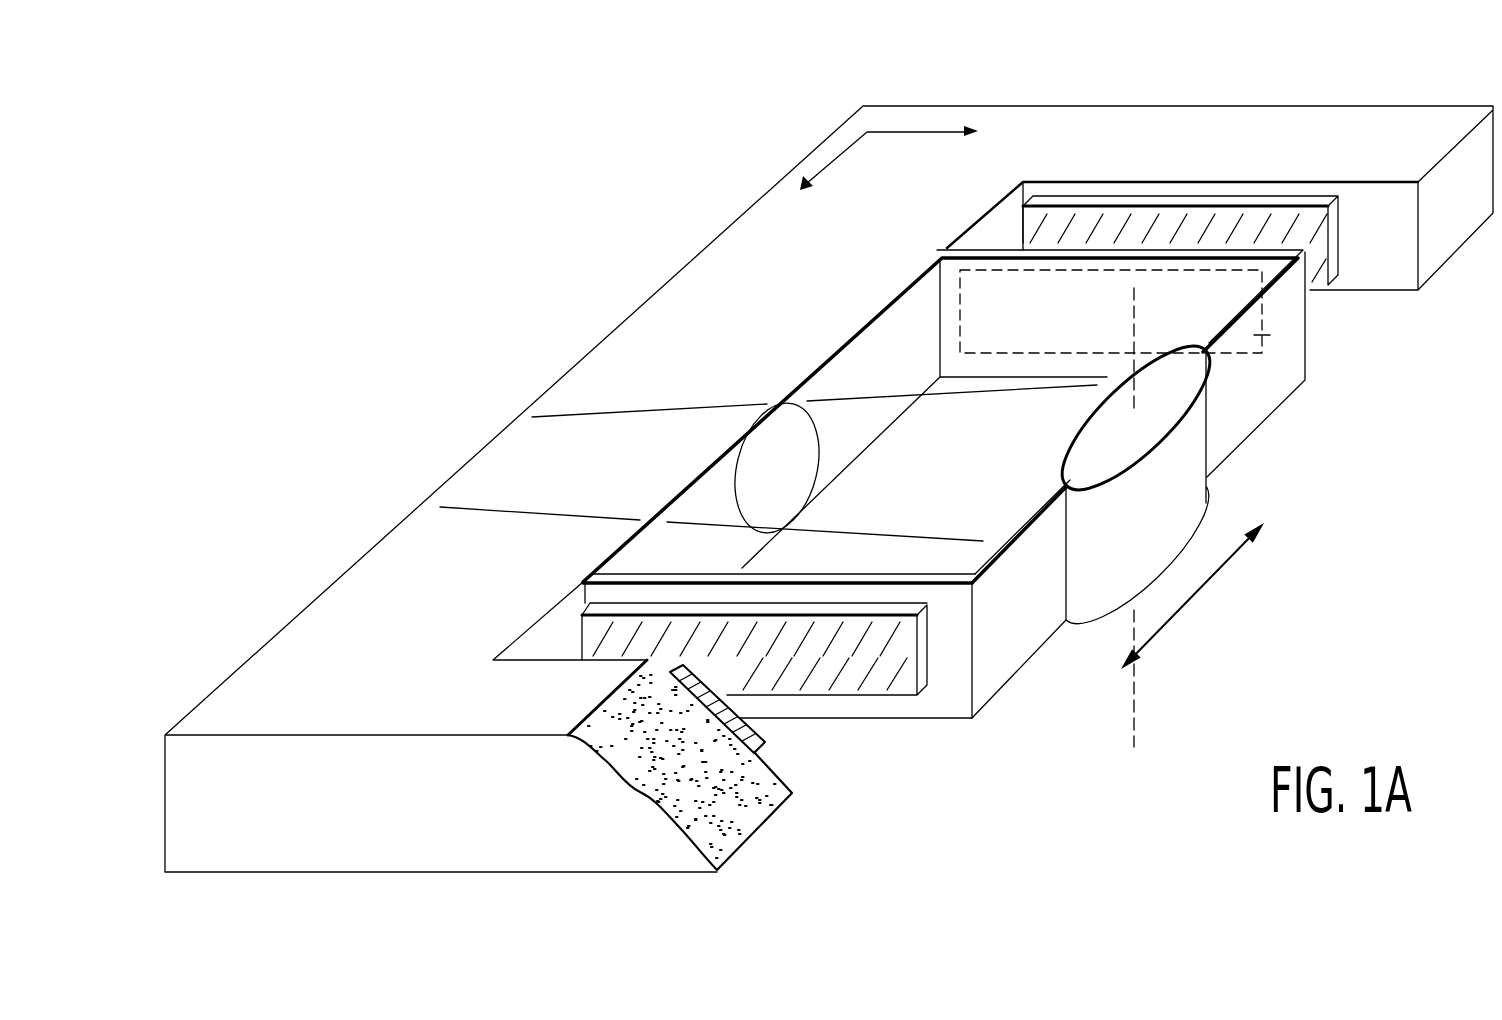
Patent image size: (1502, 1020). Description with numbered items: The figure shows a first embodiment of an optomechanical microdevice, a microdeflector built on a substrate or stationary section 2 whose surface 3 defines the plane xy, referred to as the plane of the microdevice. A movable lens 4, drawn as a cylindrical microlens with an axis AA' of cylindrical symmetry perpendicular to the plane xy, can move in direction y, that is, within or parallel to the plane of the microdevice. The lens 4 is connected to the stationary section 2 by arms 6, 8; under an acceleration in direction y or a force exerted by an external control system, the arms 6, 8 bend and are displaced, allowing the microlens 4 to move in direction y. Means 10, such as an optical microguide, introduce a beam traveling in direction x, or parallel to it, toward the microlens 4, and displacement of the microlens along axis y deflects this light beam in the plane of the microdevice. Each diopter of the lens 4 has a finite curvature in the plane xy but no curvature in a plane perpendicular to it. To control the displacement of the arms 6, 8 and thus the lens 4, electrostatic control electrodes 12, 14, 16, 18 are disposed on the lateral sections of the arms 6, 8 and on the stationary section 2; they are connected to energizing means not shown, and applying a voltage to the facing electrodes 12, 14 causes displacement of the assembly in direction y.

The substrate 2 is at (718, 220).
The surface 3 is at (1127, 122).
The movable lens 4 is at (1073, 458).
The arm 6 is at (1238, 422).
The arm 8 is at (1033, 628).
The optical microguide 10 is at (582, 433).
The control electrode 12 is at (752, 735).
The control electrode 14 is at (925, 663).
The control electrode 16 is at (1278, 340).
The control electrode 18 is at (1338, 257).